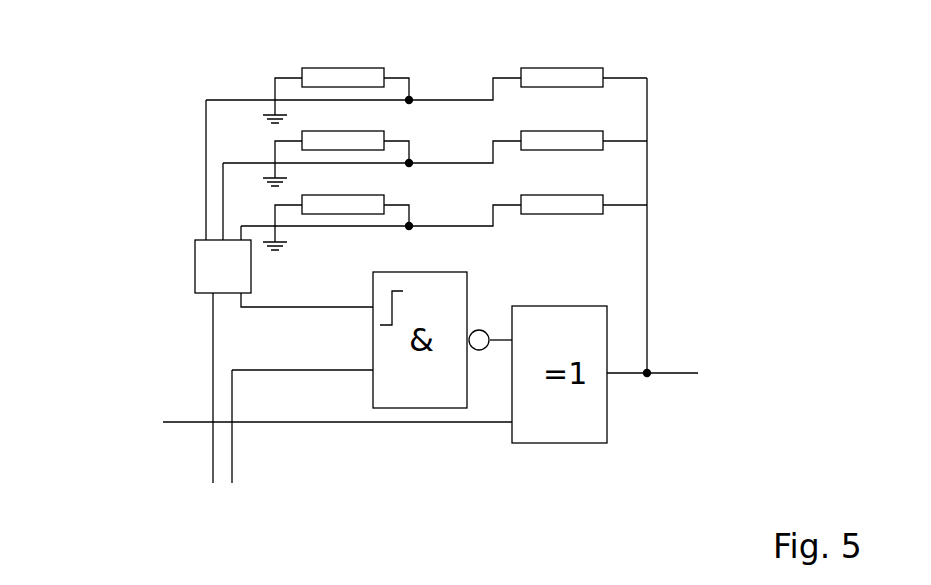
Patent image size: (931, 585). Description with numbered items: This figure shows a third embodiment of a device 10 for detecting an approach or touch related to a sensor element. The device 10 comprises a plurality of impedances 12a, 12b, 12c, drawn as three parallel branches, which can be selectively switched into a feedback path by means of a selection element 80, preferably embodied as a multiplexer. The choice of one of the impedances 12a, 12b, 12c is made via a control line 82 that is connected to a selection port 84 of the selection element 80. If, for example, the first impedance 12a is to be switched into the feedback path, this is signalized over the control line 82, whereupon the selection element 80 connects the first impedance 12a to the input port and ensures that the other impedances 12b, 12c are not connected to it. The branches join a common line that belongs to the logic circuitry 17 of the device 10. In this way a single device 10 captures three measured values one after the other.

The device 10 is at (177, 67).
The first impedance 12a is at (671, 81).
The second impedance 12b is at (671, 143).
The third impedance 12c is at (671, 206).
The logic circuitry 17 is at (625, 263).
The selection element 80 is at (223, 266).
The selection port 84 is at (212, 295).
The control line 82 is at (212, 345).